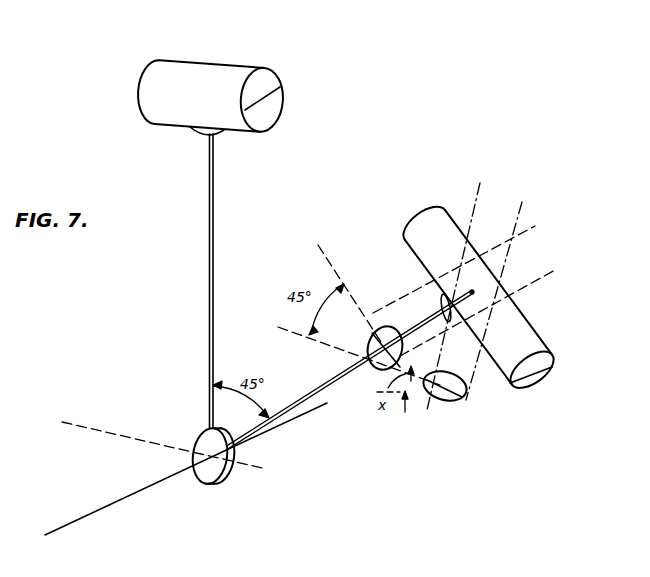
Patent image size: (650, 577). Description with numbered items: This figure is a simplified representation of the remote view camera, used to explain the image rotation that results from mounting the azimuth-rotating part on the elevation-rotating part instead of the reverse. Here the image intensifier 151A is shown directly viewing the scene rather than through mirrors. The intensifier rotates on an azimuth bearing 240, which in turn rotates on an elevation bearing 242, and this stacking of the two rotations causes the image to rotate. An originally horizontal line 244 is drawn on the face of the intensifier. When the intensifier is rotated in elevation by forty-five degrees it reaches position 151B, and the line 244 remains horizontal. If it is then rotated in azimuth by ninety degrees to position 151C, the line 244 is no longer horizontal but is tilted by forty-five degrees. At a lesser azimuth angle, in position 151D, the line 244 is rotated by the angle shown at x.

The image intensifier 151A is at (190, 60).
The image intensifier position after elevation rotation 151B is at (535, 330).
The image intensifier position after azimuth rotation 151C is at (396, 312).
The image intensifier position at lesser azimuth angle 151D is at (474, 388).
The azimuth bearing 240 is at (192, 133).
The elevation bearing 242 is at (212, 475).
The originally horizontal line 244 is at (278, 87).